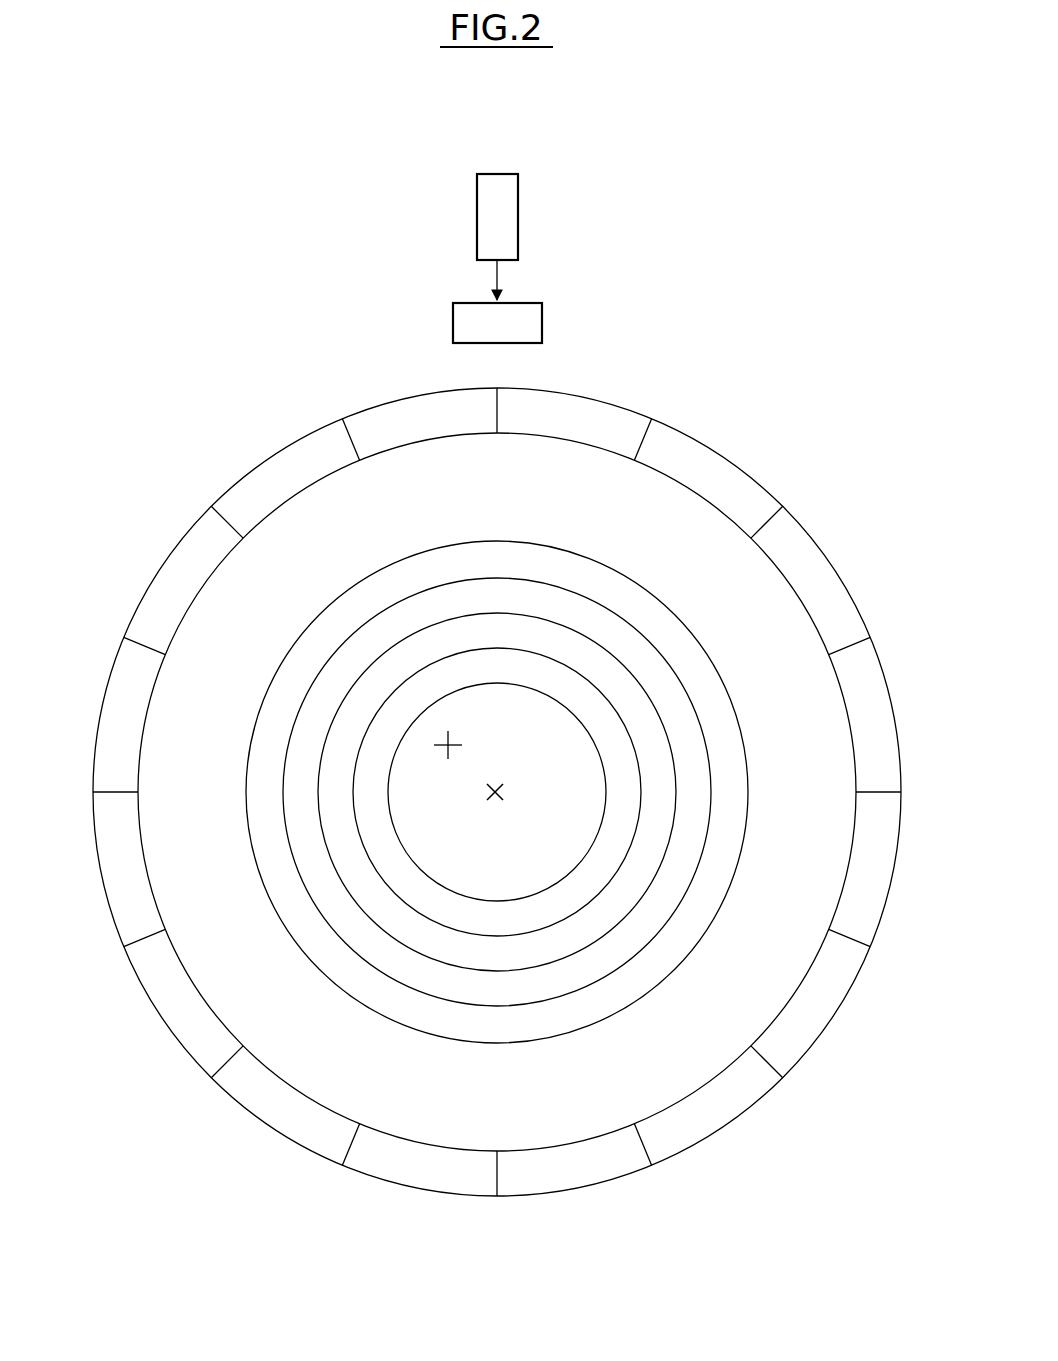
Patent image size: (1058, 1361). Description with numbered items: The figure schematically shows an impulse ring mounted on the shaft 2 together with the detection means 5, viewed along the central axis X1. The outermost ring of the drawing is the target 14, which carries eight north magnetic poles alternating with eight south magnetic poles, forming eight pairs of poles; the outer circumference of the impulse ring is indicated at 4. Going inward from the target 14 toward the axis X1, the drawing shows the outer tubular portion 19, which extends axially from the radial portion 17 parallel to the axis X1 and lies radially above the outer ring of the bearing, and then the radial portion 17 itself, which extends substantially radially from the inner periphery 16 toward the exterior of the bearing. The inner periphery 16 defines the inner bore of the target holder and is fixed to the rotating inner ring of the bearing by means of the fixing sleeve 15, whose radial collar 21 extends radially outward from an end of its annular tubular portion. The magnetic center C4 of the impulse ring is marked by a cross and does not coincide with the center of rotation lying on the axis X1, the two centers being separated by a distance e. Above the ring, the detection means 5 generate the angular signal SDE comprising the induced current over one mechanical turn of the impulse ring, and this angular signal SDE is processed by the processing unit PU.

The shaft 2 is at (418, 801).
The magnetic ring with pole segments 4 is at (832, 536).
The detection means 5 is at (547, 322).
The target 14 is at (598, 1200).
The fixing sleeve 15 is at (560, 651).
The inner periphery 16 is at (658, 775).
The radial portion 17 is at (737, 985).
The outer tubular portion 19 is at (733, 1073).
The radial collar 21 is at (595, 712).
The processing unit PU is at (518, 218).
The angular signal SDE is at (500, 272).
The magnetic center C4 is at (445, 741).
The central axis X1 is at (514, 790).